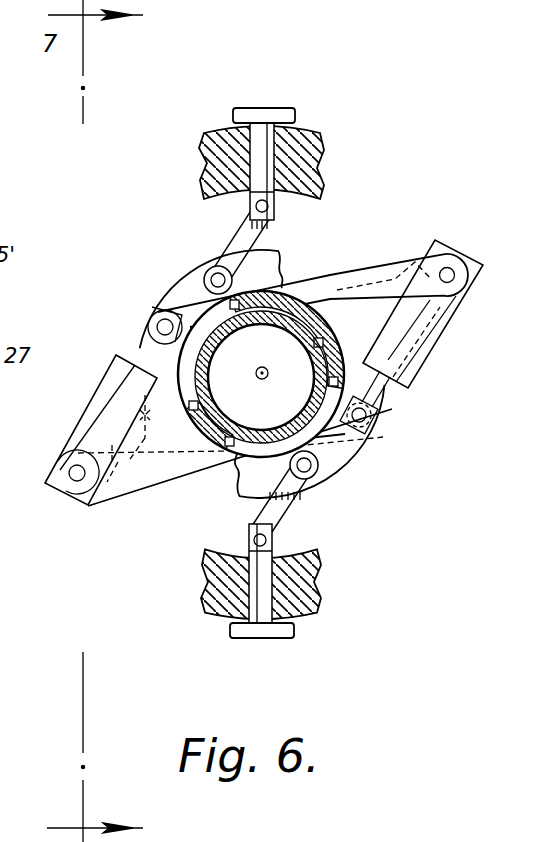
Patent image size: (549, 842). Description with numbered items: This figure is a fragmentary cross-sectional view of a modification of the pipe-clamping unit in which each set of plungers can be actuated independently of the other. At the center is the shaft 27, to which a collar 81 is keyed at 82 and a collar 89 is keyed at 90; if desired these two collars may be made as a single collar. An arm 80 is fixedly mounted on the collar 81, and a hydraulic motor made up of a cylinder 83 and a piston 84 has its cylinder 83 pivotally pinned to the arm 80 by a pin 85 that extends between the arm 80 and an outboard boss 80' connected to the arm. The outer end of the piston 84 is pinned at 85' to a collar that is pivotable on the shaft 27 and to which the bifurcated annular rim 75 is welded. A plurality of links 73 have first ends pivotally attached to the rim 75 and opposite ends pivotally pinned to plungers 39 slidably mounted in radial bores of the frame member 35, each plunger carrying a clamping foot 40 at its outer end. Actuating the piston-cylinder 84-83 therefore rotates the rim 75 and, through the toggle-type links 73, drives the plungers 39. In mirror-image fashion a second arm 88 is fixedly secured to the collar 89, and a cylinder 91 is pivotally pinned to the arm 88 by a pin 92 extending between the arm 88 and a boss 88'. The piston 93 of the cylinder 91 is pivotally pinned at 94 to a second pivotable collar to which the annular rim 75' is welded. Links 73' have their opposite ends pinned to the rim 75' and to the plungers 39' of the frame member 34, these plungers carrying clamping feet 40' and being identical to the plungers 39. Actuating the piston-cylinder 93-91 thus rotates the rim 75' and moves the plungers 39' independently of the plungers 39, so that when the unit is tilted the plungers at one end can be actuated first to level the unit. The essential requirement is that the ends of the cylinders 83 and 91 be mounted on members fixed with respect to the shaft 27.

The shaft 27 is at (290, 413).
The frame member 34 is at (208, 593).
The frame member 35 is at (308, 156).
The plungers 39 is at (193, 153).
The plungers 39' is at (334, 579).
The clamping foot 40 is at (264, 136).
The clamping foot 40' is at (272, 604).
The links 73 is at (214, 245).
The links 73' is at (315, 494).
The annular rim 75 is at (208, 291).
The annular rim 75' is at (339, 441).
The arm 80 is at (235, 480).
The outboard boss 80' is at (62, 413).
The collar 81 is at (197, 432).
The key 82 is at (230, 388).
The cylinder 83 is at (108, 386).
The piston 84 is at (140, 344).
The pin 85 is at (70, 501).
The pin 85' is at (143, 306).
The second arm 88 is at (313, 267).
The boss 88' is at (479, 224).
The collar 89 is at (336, 293).
The key 90 is at (290, 343).
The cylinder 91 is at (440, 333).
The pin 92 is at (470, 279).
The piston 93 is at (376, 393).
The pin 94 is at (383, 437).